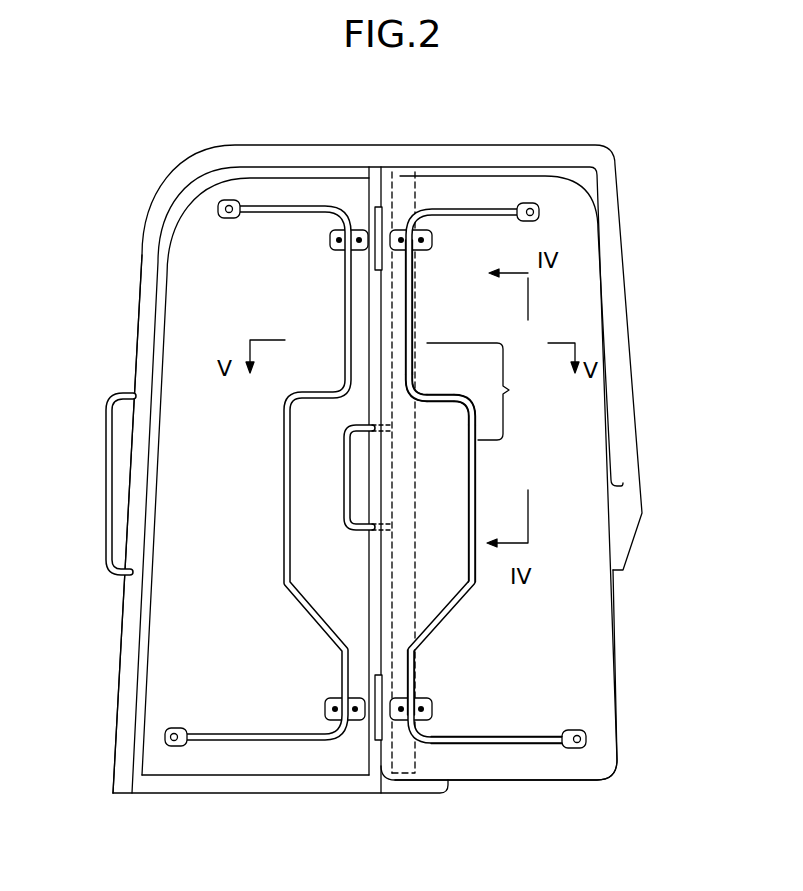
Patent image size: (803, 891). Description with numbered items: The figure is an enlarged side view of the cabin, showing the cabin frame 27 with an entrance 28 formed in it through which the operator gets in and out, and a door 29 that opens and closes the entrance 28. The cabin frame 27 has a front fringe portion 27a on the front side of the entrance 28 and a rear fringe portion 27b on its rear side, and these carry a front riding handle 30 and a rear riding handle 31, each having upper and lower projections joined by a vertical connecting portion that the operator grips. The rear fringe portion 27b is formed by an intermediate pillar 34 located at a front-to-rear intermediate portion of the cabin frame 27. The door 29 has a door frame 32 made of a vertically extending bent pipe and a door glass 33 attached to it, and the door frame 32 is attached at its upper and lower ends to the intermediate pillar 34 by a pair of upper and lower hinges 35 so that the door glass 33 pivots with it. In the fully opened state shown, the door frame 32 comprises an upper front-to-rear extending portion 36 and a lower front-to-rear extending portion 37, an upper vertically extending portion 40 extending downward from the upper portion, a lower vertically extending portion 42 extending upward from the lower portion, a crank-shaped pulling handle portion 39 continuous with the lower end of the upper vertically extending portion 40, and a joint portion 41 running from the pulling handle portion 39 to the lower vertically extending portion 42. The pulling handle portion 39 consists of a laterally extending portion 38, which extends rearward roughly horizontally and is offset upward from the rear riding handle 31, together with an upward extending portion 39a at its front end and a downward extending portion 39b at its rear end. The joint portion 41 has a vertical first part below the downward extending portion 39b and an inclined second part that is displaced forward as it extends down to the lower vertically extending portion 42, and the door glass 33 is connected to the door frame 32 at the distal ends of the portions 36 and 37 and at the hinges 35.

The cabin frame 27 is at (304, 145).
The front fringe portion 27a is at (128, 312).
The rear fringe portion 27b is at (392, 299).
The entrance 28 is at (193, 245).
The door 29 is at (610, 304).
The front riding handle 30 is at (112, 462).
The rear riding handle 31 is at (341, 463).
The door frame 32 is at (405, 337).
The door glass 33 is at (600, 628).
The intermediate pillar 34 is at (417, 190).
The hinge 35 is at (352, 210).
The upper front-to-rear extending portion 36 is at (487, 205).
The lower front-to-rear extending portion 37 is at (488, 745).
The laterally extending portion 38 is at (437, 399).
The pulling handle portion 39 is at (479, 391).
The upward extending portion 39a is at (413, 367).
The downward extending portion 39b is at (477, 420).
The upper vertically extending portion 40 is at (414, 306).
The joint portion 41 is at (476, 463).
The lower vertically extending portion 42 is at (413, 665).